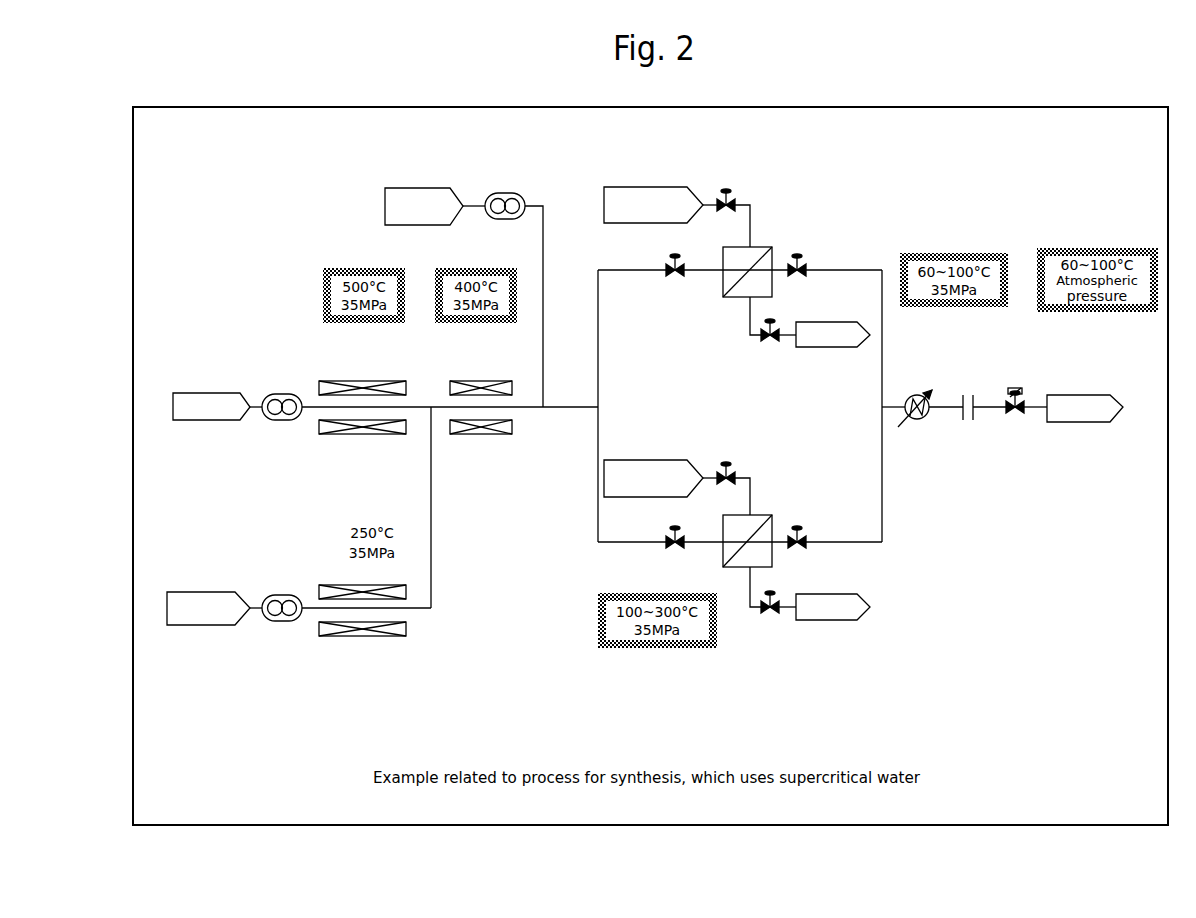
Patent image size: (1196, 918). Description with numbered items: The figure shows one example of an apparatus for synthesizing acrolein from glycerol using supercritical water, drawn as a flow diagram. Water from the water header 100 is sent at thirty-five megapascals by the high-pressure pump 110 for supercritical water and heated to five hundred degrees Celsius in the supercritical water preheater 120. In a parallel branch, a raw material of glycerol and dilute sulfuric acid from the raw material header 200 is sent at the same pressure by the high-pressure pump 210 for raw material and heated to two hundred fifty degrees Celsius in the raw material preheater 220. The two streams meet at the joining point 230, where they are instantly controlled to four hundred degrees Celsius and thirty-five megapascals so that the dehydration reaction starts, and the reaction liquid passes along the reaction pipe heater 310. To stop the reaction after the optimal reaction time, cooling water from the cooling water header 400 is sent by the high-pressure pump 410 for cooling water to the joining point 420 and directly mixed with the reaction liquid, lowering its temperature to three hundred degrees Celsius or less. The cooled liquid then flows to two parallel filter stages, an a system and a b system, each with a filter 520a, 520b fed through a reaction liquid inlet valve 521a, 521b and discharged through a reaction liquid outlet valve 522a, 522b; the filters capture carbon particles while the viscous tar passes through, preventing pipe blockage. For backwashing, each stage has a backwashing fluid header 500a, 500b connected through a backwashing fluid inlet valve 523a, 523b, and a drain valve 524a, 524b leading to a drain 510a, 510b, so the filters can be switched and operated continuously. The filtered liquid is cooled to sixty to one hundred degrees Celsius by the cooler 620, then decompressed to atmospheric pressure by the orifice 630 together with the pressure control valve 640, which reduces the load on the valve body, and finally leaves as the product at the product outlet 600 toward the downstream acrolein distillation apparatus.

The water header 100 is at (203, 393).
The high-pressure pump for supercritical water 110 is at (282, 393).
The supercritical water preheater 120 is at (362, 381).
The raw material header 200 is at (203, 592).
The high-pressure pump for raw material 210 is at (282, 622).
The raw material preheater 220 is at (362, 636).
The joining point of supercritical water and raw material 230 is at (431, 400).
The reaction pipe heater 310 is at (480, 381).
The cooling water header 400 is at (420, 188).
The high-pressure pump for cooling water 410 is at (502, 193).
The joining point of reaction liquid and cooling water 420 is at (543, 413).
The backwashing fluid header 500a is at (648, 187).
The backwashing fluid header 500b is at (648, 460).
The drain 510a is at (826, 348).
The drain 510b is at (826, 621).
The filter 520a is at (765, 247).
The filter 520b is at (765, 515).
The reaction liquid inlet valve of filter 521a is at (673, 278).
The reaction liquid inlet valve of filter 521b is at (673, 550).
The reaction liquid outlet valve of filter 522a is at (800, 278).
The reaction liquid outlet valve of filter 522b is at (800, 550).
The backwashing fluid inlet valve of filter 523a is at (722, 212).
The backwashing fluid inlet valve of filter 523b is at (722, 485).
The drain valve of filter 524a is at (766, 341).
The drain valve of filter 524b is at (766, 613).
The product outlet 600 is at (1080, 395).
The cooler 620 is at (917, 394).
The orifice 630 is at (968, 394).
The pressure control valve 640 is at (1019, 388).